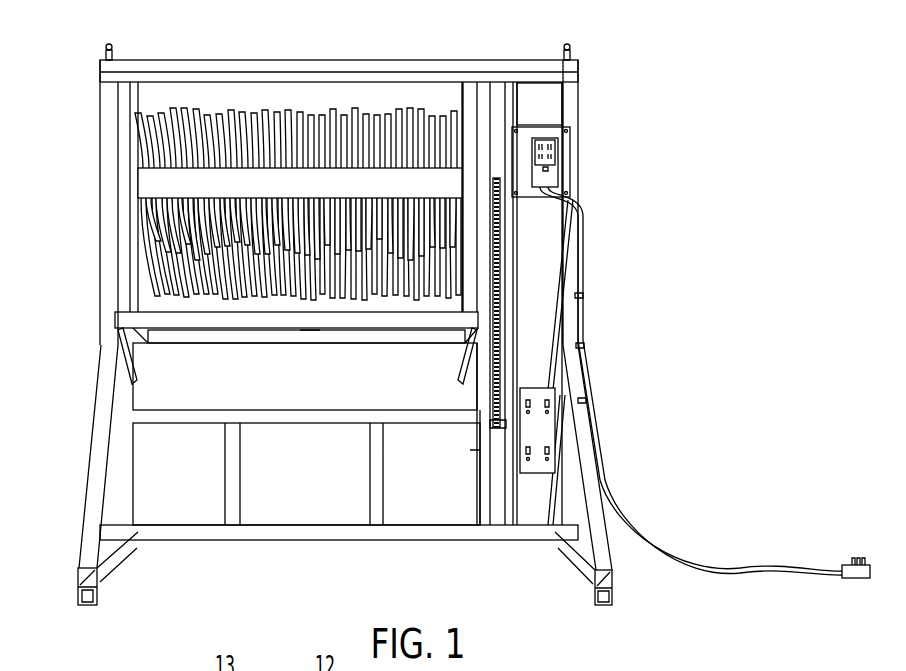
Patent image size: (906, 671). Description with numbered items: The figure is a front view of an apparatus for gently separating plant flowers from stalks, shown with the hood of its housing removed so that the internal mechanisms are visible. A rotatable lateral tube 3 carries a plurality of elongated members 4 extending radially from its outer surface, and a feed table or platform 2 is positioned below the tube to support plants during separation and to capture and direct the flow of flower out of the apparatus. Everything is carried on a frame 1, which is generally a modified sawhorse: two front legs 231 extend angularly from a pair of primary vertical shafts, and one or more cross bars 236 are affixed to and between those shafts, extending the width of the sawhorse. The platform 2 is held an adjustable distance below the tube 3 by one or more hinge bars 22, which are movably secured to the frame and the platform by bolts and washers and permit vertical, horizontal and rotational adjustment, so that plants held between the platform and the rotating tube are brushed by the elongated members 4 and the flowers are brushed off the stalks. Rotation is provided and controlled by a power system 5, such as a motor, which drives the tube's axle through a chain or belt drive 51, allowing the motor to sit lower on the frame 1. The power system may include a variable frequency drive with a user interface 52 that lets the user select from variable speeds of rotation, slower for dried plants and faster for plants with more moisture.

The frame 1 is at (568, 97).
The platform 2 is at (125, 318).
The hinge bars 22 is at (132, 368).
The tube 3 is at (393, 180).
The elongated members 4 is at (302, 118).
The power system 5 is at (540, 430).
The chain or belt drive 51 is at (500, 382).
The user interface 52 is at (553, 173).
The front legs 231 is at (85, 540).
The cross bars 236 is at (511, 74).